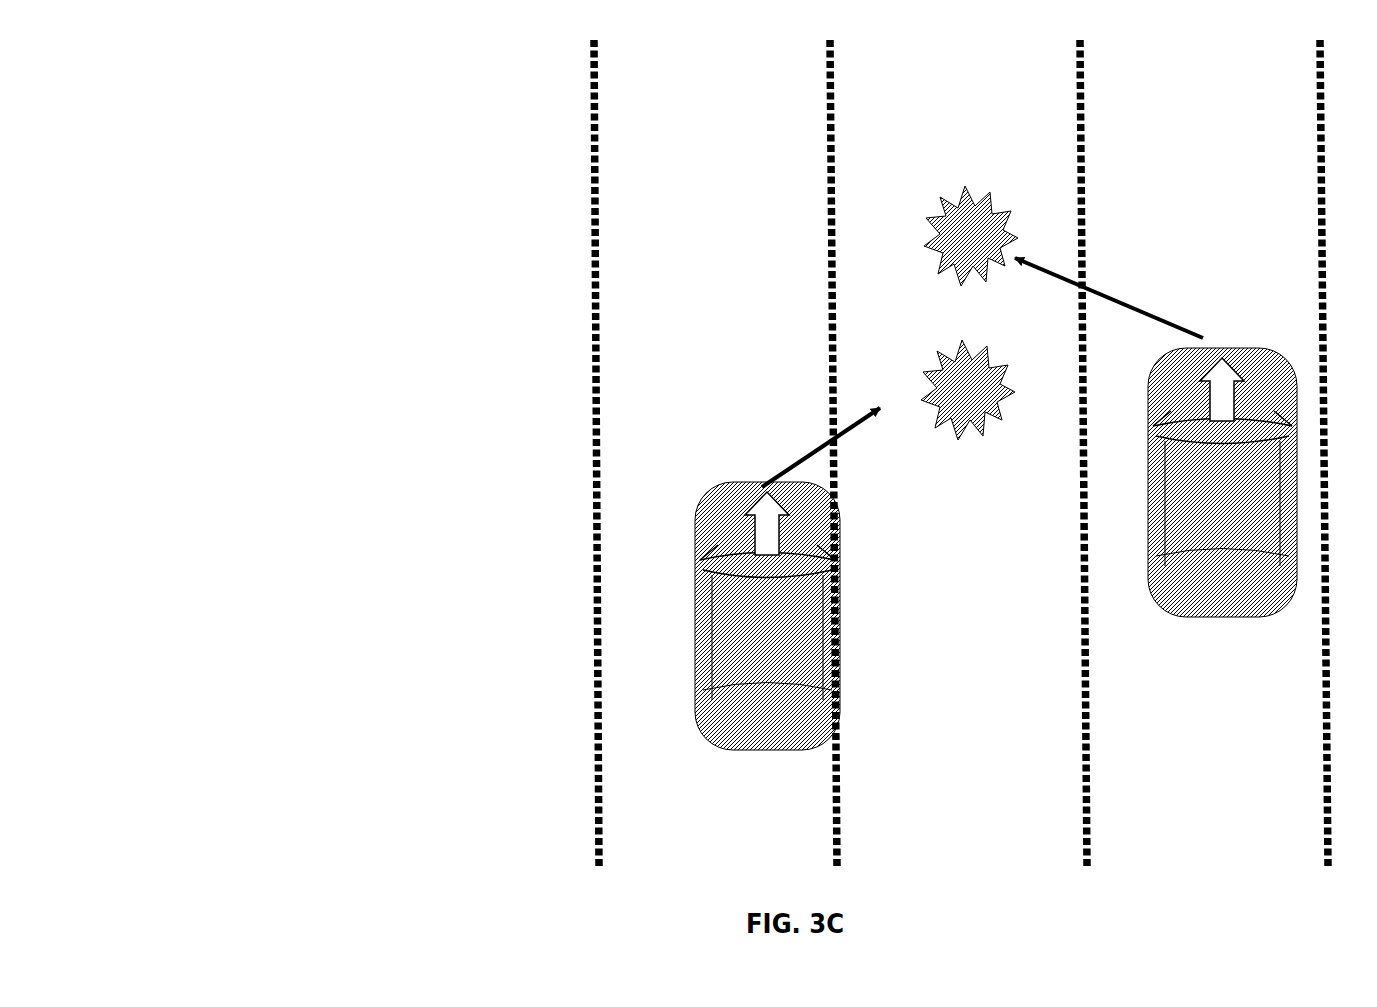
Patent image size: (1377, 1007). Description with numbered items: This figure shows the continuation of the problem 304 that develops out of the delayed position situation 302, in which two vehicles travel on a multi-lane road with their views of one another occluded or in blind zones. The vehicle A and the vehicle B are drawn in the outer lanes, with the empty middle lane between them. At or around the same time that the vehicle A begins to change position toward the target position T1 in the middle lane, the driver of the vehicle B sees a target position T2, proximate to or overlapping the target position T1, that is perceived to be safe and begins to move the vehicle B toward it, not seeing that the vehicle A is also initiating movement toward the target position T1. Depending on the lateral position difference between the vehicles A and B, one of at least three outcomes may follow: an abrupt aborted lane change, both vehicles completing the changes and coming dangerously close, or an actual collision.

The delayed position situation 302 is at (203, 48).
The problem 304 is at (494, 364).
The vehicle A is at (787, 579).
The vehicle B is at (1156, 437).
The target position T1 is at (968, 390).
The target position T2 is at (971, 236).